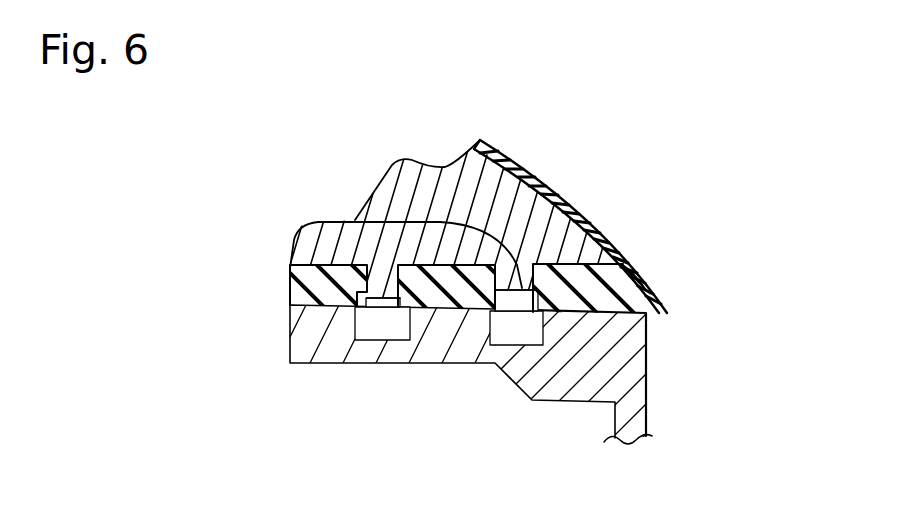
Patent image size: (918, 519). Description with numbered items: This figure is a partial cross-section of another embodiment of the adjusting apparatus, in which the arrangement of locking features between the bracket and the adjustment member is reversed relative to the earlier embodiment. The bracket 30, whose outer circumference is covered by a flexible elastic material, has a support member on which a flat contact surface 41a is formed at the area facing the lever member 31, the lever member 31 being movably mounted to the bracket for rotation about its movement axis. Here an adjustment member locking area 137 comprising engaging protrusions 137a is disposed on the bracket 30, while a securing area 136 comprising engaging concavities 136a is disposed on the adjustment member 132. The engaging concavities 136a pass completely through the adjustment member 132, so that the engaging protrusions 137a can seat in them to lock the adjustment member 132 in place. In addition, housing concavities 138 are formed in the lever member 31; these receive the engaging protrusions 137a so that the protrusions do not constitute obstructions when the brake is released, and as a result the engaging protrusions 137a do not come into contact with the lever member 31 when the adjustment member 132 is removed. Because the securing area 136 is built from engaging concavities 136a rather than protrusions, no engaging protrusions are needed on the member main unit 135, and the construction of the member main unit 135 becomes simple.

The bracket 30 is at (595, 205).
The lever member 31 is at (682, 371).
The contact surface 41a is at (290, 286).
The adjustment member 132 is at (633, 279).
The member main unit 135 is at (600, 242).
The securing area 136 is at (423, 385).
The engaging concavities 136a is at (478, 421).
The adjustment member locking area 137 is at (456, 210).
The engaging protrusions 137a is at (348, 143).
The housing concavities 138 is at (378, 295).